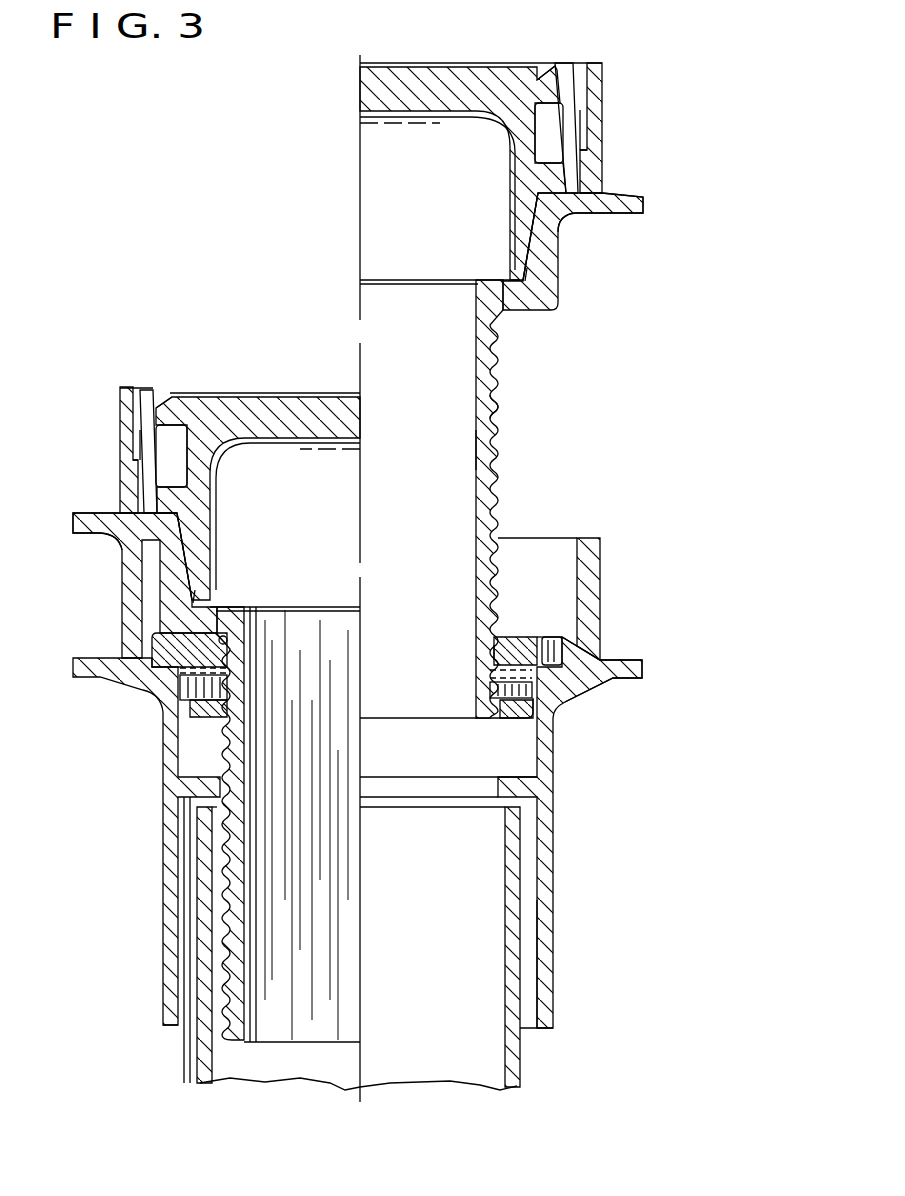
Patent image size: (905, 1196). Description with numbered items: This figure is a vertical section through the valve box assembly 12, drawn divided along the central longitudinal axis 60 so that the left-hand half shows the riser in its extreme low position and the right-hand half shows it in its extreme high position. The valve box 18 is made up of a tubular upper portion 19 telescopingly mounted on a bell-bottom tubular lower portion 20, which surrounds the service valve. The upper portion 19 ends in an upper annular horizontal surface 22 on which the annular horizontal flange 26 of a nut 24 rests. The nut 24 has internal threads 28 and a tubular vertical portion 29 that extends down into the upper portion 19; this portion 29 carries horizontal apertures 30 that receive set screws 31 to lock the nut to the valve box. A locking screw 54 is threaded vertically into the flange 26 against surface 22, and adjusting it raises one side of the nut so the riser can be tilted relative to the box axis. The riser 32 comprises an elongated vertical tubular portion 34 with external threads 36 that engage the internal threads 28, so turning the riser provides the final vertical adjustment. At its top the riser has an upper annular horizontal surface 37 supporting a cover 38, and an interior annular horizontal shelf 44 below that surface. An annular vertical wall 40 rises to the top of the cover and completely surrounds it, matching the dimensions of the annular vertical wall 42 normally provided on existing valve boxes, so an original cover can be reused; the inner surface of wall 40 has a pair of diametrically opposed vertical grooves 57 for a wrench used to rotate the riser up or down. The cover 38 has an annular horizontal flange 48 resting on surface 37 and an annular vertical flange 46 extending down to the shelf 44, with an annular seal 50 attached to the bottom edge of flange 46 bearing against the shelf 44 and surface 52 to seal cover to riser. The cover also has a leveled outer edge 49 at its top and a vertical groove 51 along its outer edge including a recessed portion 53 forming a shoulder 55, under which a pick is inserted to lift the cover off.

The valve box assembly 12 is at (336, 113).
The valve box 18 is at (158, 868).
The tubular upper portion 19 is at (549, 996).
The bell-bottom tubular lower portion 20 is at (515, 1071).
The upper annular horizontal surface 22 is at (598, 668).
The nut 24 is at (511, 636).
The annular horizontal flange 26 is at (568, 651).
The internal threads 28 is at (492, 651).
The tubular vertical portion 29 is at (512, 717).
The horizontal apertures 30 is at (490, 689).
The set screws 31 is at (535, 691).
The riser 32 is at (512, 365).
The elongated vertical tubular portion 34 is at (486, 449).
The external threads 36 is at (498, 403).
The upper annular horizontal surface 37 is at (573, 184).
The cover 38 is at (537, 78).
The annular vertical wall 40 is at (601, 98).
The annular vertical wall 42 is at (597, 568).
The interior annular horizontal shelf 44 is at (487, 289).
The annular vertical flange 46 is at (511, 211).
The annular horizontal flange 48 is at (556, 186).
The leveled outer edge 49 is at (562, 71).
The annular seal 50 is at (531, 273).
The vertical groove 51 is at (572, 94).
The surface 52 is at (531, 239).
The recessed portion 53 is at (361, 295).
The locking screw 54 is at (548, 648).
The shoulder 55 is at (584, 116).
The vertical grooves 57 is at (588, 113).
The central longitudinal axis 60 is at (359, 241).